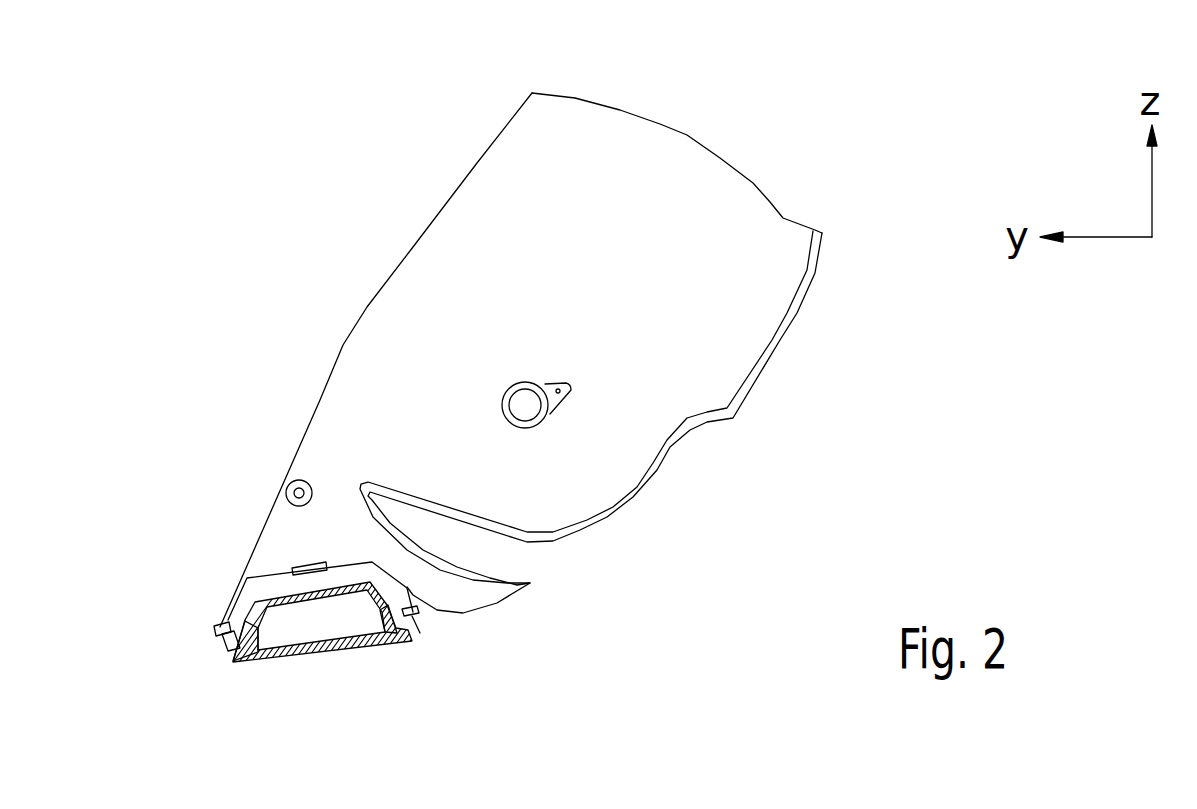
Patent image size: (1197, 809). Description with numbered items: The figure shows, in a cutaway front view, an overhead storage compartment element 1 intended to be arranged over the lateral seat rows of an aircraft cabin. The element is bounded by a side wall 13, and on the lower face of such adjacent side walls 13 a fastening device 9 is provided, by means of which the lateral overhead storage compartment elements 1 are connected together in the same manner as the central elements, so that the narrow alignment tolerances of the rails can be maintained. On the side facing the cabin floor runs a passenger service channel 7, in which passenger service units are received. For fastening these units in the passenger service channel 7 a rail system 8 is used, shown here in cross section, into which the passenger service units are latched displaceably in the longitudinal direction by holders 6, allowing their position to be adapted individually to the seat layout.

The overhead storage compartment element 1 is at (222, 212).
The side wall 13 is at (558, 265).
The fastening device 9 is at (303, 563).
The passenger service channel 7 is at (263, 583).
The holder 6 is at (225, 653).
The rail system 8 is at (213, 625).